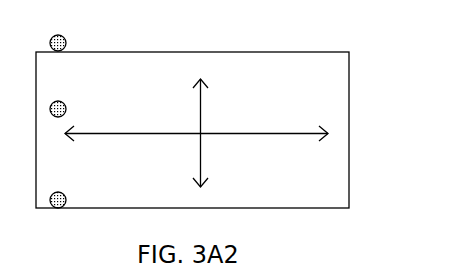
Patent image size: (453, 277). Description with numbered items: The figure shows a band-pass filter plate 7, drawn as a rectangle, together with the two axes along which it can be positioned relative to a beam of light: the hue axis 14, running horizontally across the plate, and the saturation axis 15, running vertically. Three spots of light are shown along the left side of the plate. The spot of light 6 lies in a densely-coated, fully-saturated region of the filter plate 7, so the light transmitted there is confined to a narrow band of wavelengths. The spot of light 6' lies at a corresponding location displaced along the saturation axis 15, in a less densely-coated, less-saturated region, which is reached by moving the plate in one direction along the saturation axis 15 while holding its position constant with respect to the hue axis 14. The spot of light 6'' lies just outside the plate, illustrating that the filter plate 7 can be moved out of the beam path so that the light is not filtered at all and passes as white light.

The band-pass filter plate 7 is at (349, 67).
The spot of light 6 is at (84, 217).
The spot of light 6' is at (105, 70).
The spot of light 6'' is at (90, 30).
The saturation axis 15 is at (200, 148).
The hue axis 14 is at (274, 134).